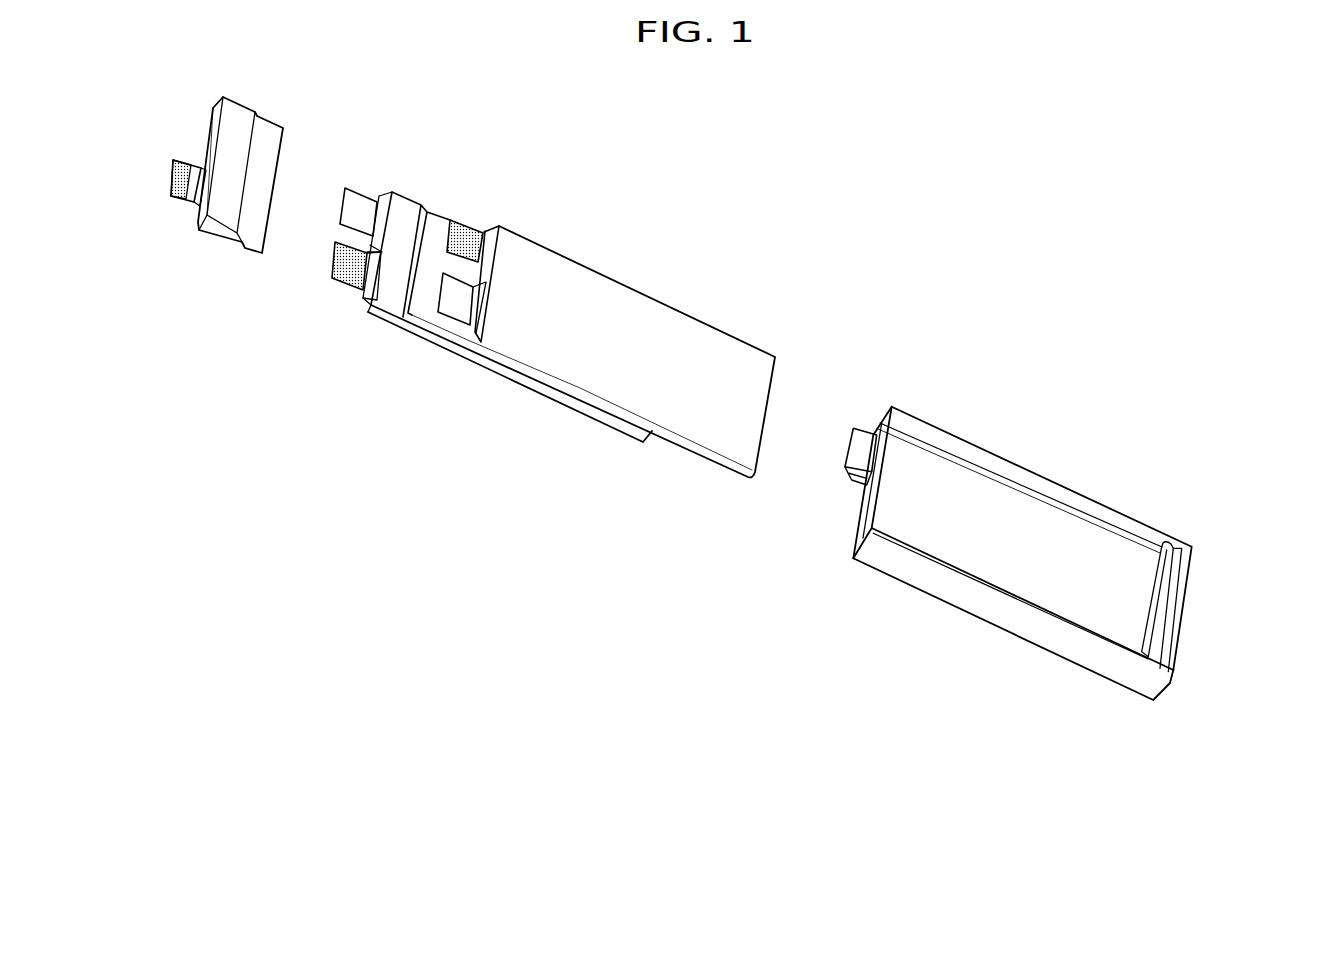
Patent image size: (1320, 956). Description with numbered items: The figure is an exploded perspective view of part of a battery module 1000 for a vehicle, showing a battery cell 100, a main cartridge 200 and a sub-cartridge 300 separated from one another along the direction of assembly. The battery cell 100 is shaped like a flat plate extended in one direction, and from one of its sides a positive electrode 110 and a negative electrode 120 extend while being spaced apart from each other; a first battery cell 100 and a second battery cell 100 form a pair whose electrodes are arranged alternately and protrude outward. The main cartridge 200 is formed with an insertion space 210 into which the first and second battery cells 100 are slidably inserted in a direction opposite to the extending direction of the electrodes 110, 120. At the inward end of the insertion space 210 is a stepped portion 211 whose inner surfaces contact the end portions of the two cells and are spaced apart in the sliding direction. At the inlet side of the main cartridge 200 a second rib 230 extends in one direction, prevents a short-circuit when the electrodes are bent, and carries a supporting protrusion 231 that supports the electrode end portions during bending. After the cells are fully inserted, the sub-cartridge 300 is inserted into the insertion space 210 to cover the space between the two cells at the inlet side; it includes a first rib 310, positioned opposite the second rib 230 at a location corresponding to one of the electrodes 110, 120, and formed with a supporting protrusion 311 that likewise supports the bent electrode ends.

The battery module 1000 is at (792, 236).
The battery cell 100 is at (546, 302).
The positive electrode 110 is at (470, 240).
The negative electrode 120 is at (358, 205).
The main cartridge 200 is at (1023, 540).
The insertion space 210 is at (1081, 593).
The stepped portion 211 is at (1163, 599).
The second rib 230 is at (841, 501).
The supporting protrusion 231 is at (848, 478).
The sub-cartridge 300 is at (216, 205).
The first rib 310 is at (178, 188).
The supporting protrusion 311 is at (190, 163).